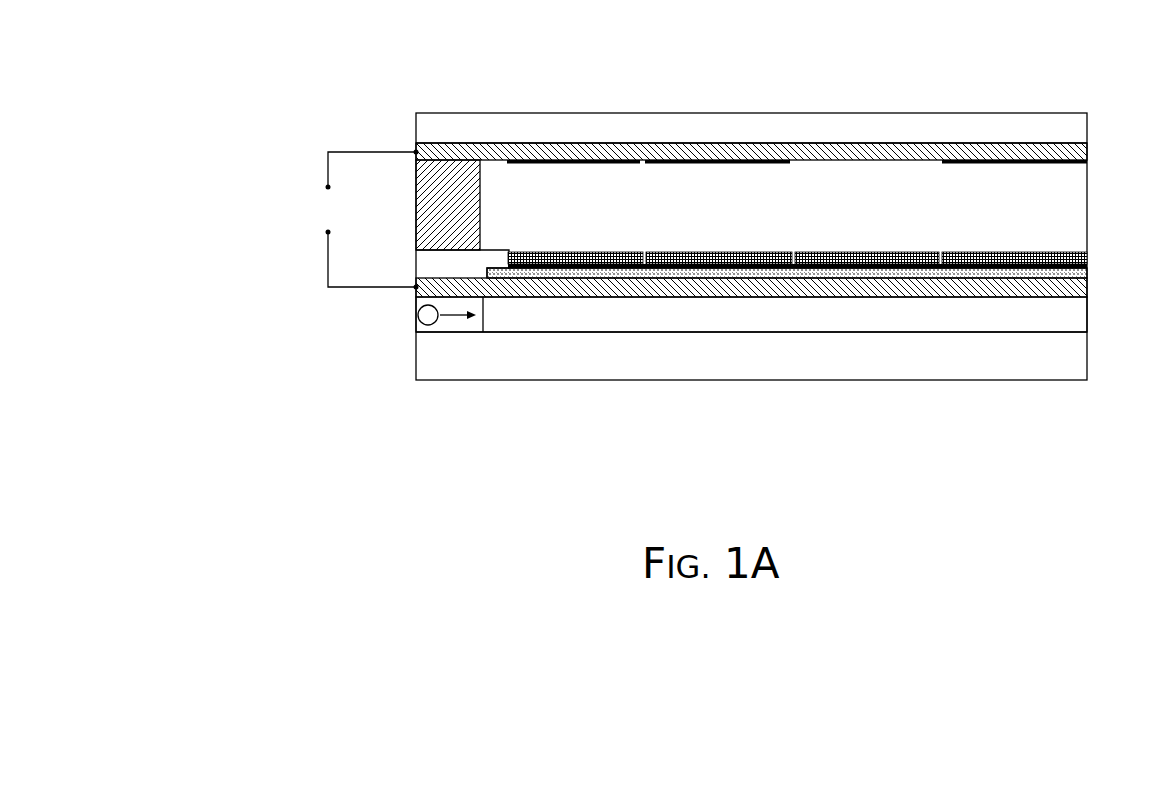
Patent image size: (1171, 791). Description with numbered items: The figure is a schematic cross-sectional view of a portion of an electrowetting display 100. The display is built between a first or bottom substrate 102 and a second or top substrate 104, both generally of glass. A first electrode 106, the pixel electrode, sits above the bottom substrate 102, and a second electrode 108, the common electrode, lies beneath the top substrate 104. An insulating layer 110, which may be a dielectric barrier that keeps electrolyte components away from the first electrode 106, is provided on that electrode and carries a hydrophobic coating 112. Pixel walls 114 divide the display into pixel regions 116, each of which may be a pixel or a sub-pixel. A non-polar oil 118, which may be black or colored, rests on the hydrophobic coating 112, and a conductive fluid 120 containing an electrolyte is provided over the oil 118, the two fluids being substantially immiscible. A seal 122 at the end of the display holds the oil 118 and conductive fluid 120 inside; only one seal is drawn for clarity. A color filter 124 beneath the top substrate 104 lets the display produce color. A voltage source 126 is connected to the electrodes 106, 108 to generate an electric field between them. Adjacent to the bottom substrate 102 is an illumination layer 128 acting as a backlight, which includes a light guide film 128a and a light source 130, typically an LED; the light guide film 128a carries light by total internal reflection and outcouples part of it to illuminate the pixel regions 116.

The electrowetting display 100 is at (1042, 28).
The first substrate 102 is at (751, 348).
The second substrate 104 is at (751, 130).
The first electrode 106 is at (1087, 289).
The second electrode 108 is at (1087, 153).
The insulating layer 110 is at (1087, 276).
The hydrophobic coating 112 is at (1087, 264).
The pixel walls 114 is at (416, 275).
The pixel regions 116 is at (578, 228).
The oil 118 is at (692, 252).
The conductive fluid 120 is at (708, 205).
The seal 122 is at (416, 193).
The color filter 124 is at (556, 165).
The voltage source 126 is at (287, 170).
The illumination layer 128 is at (1096, 329).
The light guide film 128a is at (601, 314).
The light source 130 is at (418, 306).